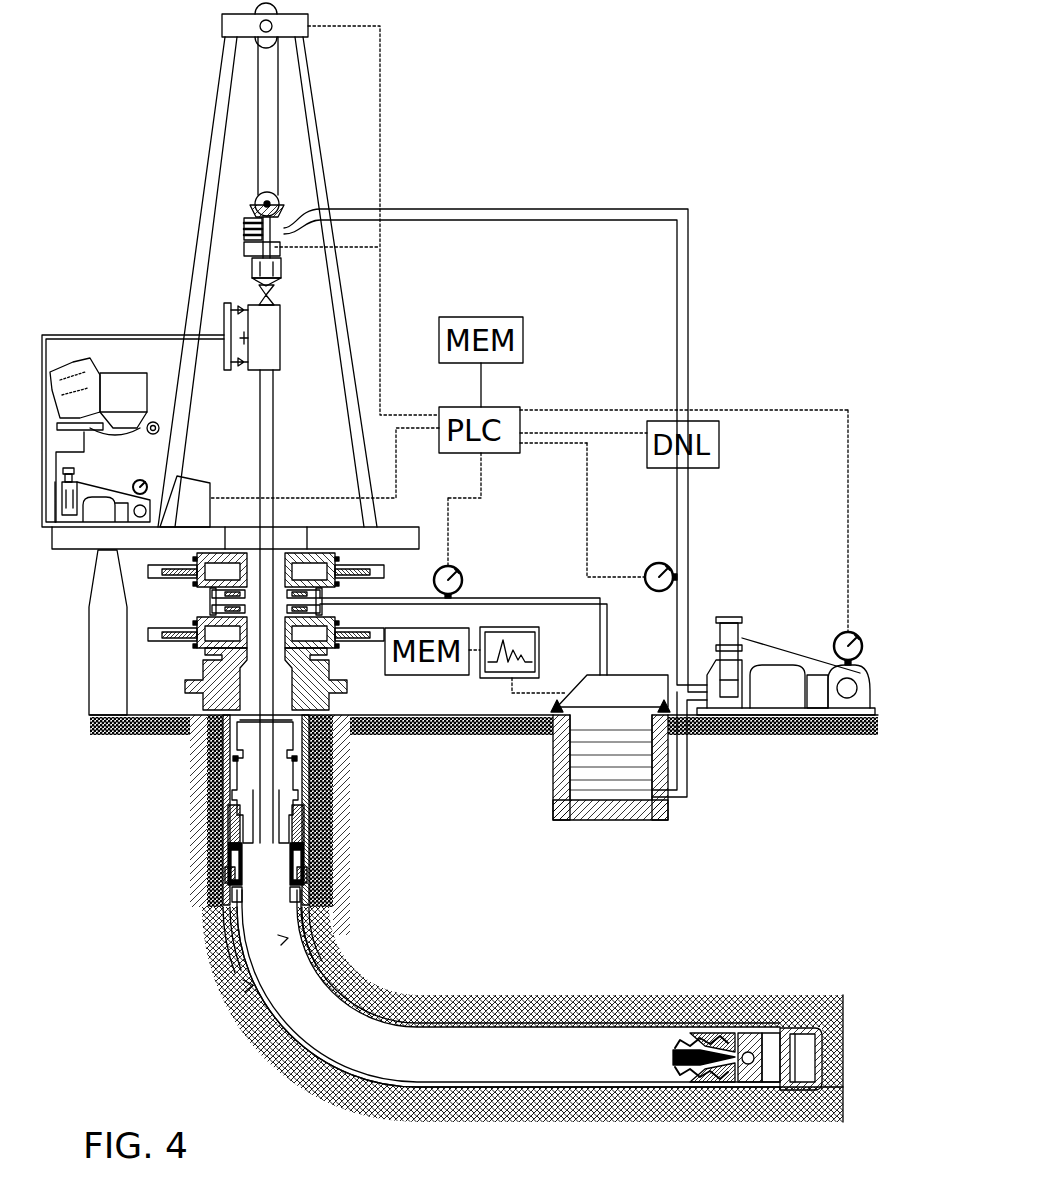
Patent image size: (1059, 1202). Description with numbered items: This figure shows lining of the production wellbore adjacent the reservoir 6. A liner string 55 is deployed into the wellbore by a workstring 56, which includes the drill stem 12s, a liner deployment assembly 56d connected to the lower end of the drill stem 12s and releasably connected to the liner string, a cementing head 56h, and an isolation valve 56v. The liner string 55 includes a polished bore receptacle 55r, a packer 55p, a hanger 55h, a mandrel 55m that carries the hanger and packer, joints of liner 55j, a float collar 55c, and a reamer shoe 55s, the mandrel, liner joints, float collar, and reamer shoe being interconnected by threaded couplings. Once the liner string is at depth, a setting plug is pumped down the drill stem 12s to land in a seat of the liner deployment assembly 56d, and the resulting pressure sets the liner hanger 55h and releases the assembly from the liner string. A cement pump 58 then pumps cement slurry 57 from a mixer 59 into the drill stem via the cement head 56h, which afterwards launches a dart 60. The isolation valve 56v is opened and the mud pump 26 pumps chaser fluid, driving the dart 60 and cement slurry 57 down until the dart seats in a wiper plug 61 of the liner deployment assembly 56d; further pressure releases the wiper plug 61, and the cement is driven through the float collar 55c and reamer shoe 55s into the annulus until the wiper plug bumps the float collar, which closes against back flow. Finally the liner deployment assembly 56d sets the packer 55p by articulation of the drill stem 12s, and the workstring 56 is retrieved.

The reservoir 6 is at (524, 1000).
The drill stem 12s is at (275, 452).
The mud pump 26 is at (787, 655).
The liner string 55 is at (105, 800).
The polished bore receptacle 55r is at (233, 812).
The packer 55p is at (228, 845).
The hanger 55h is at (228, 872).
The mandrel 55m is at (233, 897).
The joints of liner 55j is at (295, 1023).
The float collar 55c is at (745, 1075).
The reamer shoe 55s is at (800, 1090).
The workstring 56 is at (305, 445).
The isolation valve 56v is at (272, 285).
The cementing head 56h is at (283, 350).
The liner deployment assembly 56d is at (280, 778).
The cement slurry 57 is at (520, 1090).
The cement pump 58 is at (100, 490).
The mixer 59 is at (120, 378).
The dart 60 is at (679, 1052).
The wiper plug 61 is at (718, 1038).